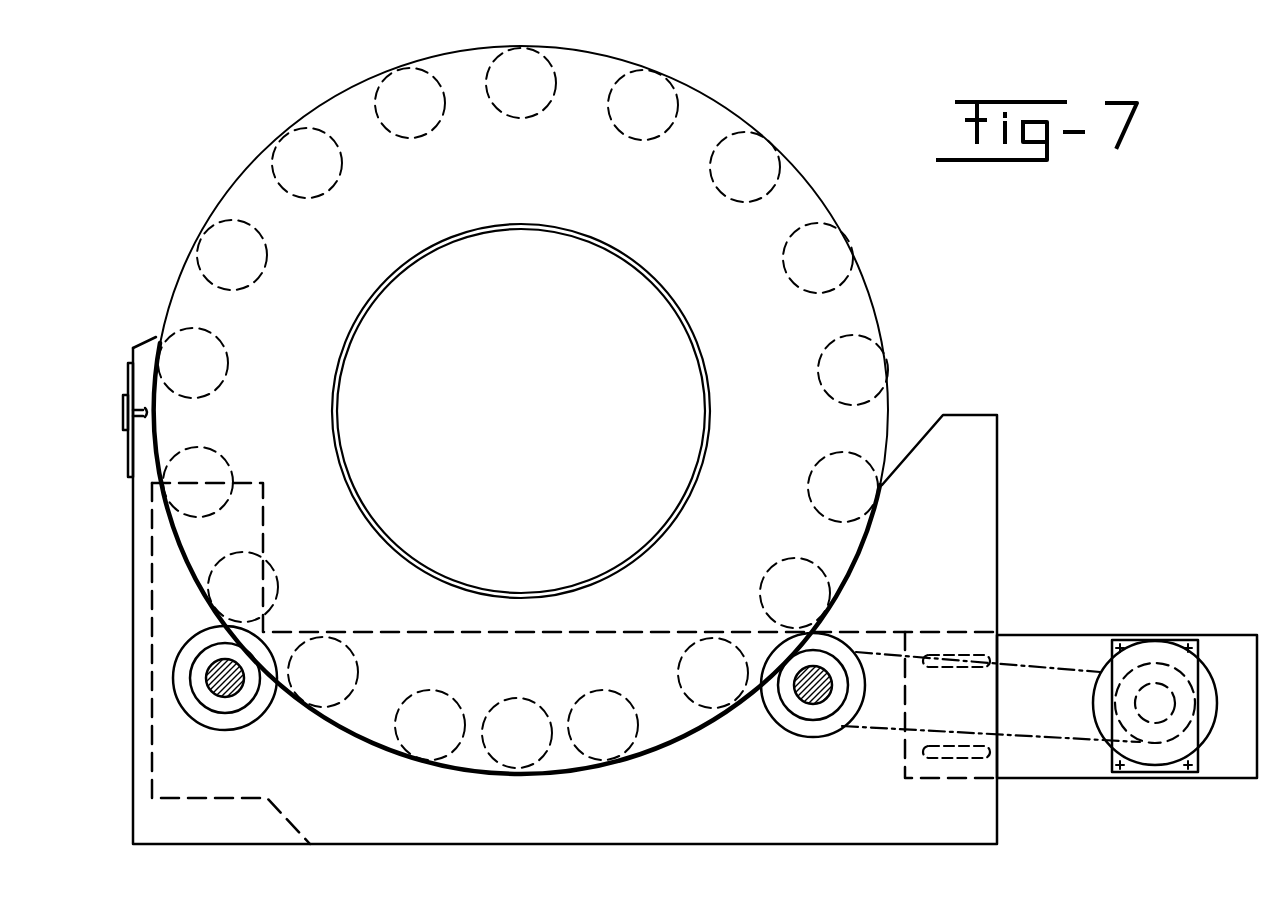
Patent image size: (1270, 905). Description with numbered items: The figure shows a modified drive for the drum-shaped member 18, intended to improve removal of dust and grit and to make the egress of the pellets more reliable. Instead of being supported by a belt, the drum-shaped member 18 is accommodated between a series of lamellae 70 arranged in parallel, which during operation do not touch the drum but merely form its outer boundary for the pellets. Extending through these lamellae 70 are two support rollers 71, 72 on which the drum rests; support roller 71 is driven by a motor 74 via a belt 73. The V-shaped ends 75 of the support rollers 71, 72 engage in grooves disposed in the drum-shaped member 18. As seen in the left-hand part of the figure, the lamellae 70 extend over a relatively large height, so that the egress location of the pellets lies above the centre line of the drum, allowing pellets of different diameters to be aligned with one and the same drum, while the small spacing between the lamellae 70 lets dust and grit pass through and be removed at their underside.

The drum-shaped member 18 is at (812, 187).
The lamellae 70 is at (973, 498).
The support roller 71 is at (822, 713).
The support roller 72 is at (220, 706).
The belt 73 is at (1050, 665).
The motor 74 is at (1170, 660).
The V-shaped ends 75 is at (262, 716).